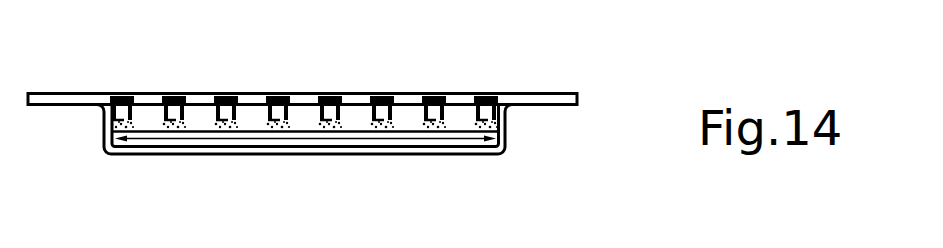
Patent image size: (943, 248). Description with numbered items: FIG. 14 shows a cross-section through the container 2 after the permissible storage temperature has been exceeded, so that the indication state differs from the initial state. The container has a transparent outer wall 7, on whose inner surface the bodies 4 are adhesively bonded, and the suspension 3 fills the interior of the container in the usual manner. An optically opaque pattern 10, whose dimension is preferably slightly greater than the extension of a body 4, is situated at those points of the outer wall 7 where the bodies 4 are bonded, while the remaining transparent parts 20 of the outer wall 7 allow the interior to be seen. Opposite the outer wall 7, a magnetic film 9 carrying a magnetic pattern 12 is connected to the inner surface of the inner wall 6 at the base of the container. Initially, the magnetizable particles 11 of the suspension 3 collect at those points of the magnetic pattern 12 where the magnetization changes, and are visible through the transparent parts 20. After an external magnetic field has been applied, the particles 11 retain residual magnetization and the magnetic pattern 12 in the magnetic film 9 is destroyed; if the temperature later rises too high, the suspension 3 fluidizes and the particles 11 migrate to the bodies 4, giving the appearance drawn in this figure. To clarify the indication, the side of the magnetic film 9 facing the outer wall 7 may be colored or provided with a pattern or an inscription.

The heat exchanger / collector assembly 2 is at (540, 133).
The suspension 3 is at (306, 117).
The bodies 4 is at (175, 112).
The separator plate 6 is at (335, 132).
The outer wall 7 is at (71, 92).
The magnetic film 9 is at (277, 136).
The optically opaque pattern 10 is at (227, 110).
The particles 11 is at (213, 117).
The magnetic pattern 12 is at (148, 141).
The transparent parts 20 is at (403, 96).